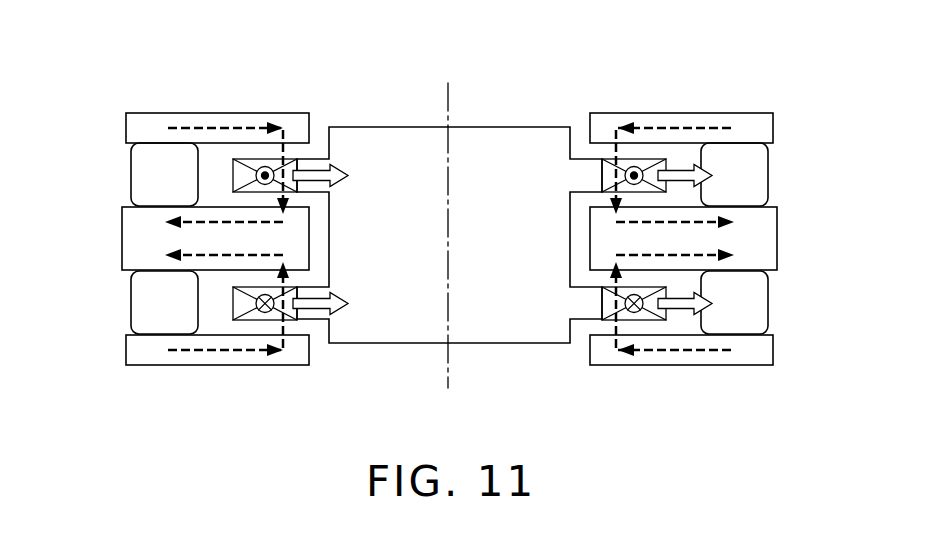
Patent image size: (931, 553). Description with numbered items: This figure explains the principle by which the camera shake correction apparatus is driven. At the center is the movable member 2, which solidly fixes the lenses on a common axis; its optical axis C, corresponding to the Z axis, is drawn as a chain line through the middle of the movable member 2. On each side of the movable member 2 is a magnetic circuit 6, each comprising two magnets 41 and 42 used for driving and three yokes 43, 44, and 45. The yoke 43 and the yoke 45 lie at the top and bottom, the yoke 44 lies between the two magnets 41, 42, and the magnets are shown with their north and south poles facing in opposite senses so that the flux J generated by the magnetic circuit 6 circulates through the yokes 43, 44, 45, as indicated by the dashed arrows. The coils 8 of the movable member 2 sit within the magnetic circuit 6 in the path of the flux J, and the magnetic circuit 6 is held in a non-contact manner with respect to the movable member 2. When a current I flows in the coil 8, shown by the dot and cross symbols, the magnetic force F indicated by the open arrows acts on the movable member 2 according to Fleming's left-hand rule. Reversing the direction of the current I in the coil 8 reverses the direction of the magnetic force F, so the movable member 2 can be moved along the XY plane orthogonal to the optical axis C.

The movable member 2 is at (490, 305).
The magnetic circuit 6 is at (192, 94).
The coil 8 is at (290, 158).
The magnet 41 is at (135, 172).
The magnet 42 is at (135, 300).
The yoke 43 is at (130, 125).
The yoke 44 is at (130, 236).
The yoke 45 is at (130, 348).
The optical axis C is at (446, 98).
The current I is at (258, 166).
The magnetic force F is at (313, 182).
The flux J is at (222, 126).